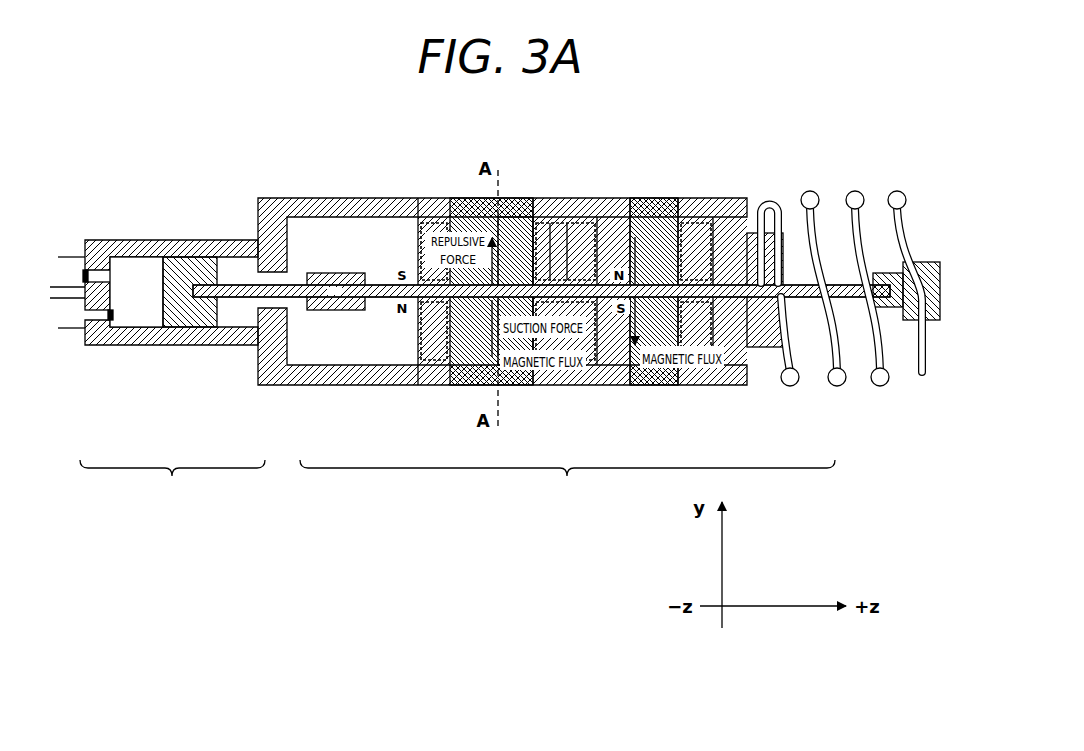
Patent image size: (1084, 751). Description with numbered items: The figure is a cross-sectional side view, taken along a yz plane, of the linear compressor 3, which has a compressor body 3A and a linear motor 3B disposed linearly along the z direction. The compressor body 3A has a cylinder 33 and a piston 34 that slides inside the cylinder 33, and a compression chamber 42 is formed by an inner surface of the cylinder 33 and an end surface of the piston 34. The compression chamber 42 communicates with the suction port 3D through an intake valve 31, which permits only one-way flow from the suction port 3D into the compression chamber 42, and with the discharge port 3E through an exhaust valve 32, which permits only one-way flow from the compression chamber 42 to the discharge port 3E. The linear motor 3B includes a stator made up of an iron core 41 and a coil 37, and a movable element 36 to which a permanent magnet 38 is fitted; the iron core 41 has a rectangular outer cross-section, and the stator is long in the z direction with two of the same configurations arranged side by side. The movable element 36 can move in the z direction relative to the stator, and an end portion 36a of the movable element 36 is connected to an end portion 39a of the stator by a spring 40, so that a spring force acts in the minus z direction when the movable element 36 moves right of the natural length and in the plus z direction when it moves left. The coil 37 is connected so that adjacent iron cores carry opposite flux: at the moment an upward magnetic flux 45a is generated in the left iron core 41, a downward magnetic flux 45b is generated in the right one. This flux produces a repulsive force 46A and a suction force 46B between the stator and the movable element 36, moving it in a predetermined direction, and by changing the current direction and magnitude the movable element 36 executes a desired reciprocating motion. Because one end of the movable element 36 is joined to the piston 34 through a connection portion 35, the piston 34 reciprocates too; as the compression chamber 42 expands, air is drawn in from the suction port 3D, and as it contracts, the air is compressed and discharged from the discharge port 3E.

The linear compressor 3 is at (203, 156).
The compressor body 3A is at (172, 481).
The linear motor 3B is at (567, 481).
The suction port 3D is at (68, 318).
The discharge port 3E is at (67, 270).
The intake valve 31 is at (112, 320).
The exhaust valve 32 is at (85, 272).
The cylinder 33 is at (160, 328).
The piston 34 is at (190, 318).
The connection portion 35 is at (333, 312).
The movable element 36 is at (385, 298).
The end portion of the movable element 36a is at (922, 267).
The coil 37 is at (435, 372).
The permanent magnet 38 is at (467, 372).
The end portion of the stator 39a is at (748, 233).
The spring 40 is at (776, 350).
The iron core 41 is at (463, 213).
The compression chamber 42 is at (137, 260).
The upward magnetic flux 45a is at (508, 245).
The downward magnetic flux 45b is at (657, 240).
The repulsive force 46A is at (425, 262).
The suction force 46B is at (553, 232).